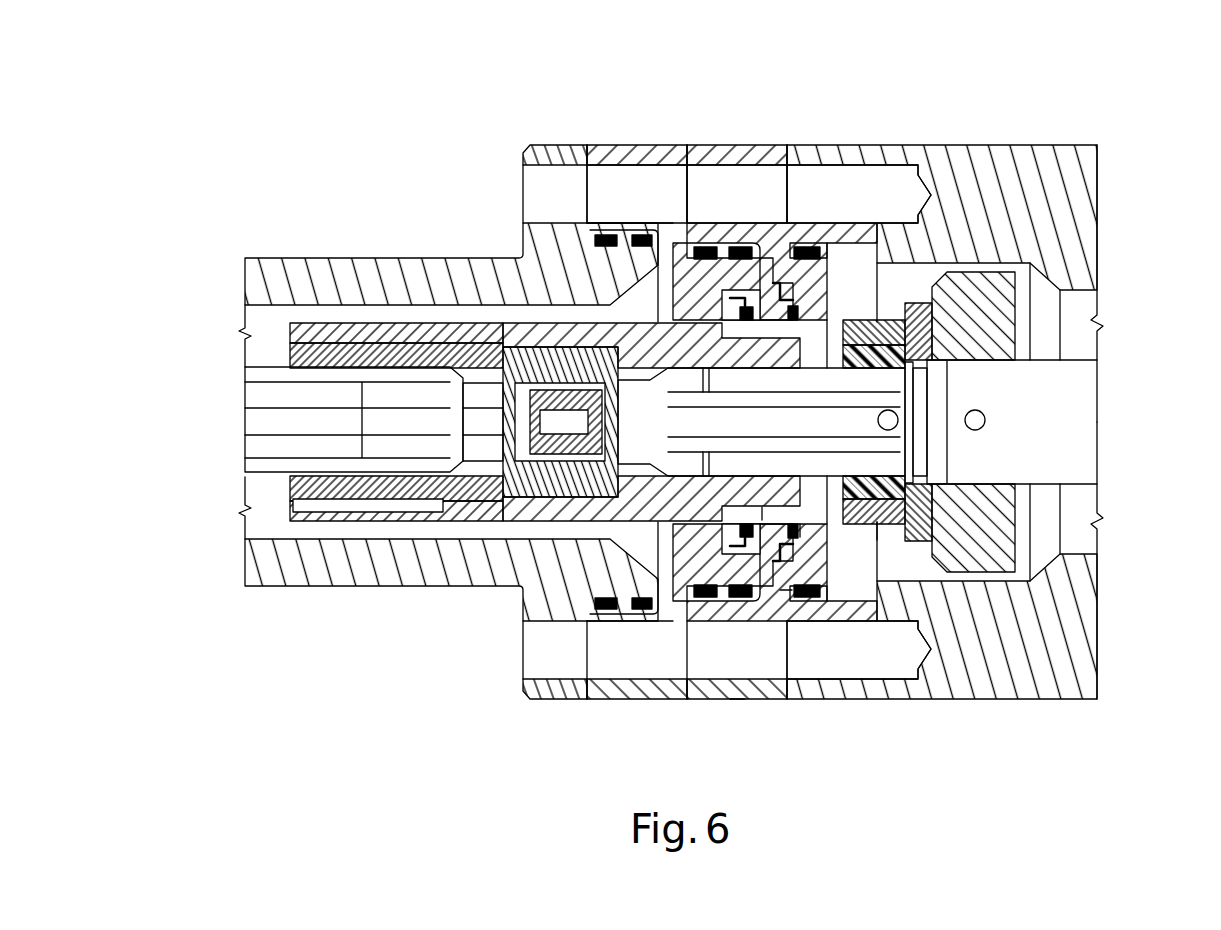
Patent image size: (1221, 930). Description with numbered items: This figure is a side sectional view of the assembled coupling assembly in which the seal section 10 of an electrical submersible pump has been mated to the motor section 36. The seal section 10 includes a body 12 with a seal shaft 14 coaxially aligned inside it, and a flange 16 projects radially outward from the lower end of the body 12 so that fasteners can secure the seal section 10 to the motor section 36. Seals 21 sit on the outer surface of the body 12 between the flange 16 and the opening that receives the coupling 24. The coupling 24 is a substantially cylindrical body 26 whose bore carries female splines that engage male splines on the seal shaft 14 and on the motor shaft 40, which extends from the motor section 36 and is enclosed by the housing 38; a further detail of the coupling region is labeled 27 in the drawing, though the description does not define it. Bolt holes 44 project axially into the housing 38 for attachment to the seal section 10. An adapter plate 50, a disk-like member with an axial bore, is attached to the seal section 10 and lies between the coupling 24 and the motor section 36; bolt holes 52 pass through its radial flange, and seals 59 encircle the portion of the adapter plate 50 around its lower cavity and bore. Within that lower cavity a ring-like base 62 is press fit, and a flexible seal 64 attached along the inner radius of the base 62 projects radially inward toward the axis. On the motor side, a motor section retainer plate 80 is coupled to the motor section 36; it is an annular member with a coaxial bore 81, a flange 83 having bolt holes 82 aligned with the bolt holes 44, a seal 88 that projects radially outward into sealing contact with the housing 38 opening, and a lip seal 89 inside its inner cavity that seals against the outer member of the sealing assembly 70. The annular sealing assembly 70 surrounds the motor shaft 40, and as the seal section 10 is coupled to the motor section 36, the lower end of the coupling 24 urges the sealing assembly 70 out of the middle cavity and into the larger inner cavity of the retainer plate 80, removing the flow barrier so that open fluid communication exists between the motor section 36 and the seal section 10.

The seal section 10 is at (232, 190).
The body 12 is at (430, 256).
The seal shaft 14 is at (265, 397).
The flange 16 is at (562, 142).
The seals 21 is at (603, 222).
The coupling 24 is at (818, 490).
The cylindrical body 26 is at (785, 592).
The seal passage 27 is at (768, 512).
The motor section 36 is at (1083, 112).
The housing 38 is at (1045, 142).
The motor shaft 40 is at (856, 426).
The bolt holes 44 is at (888, 661).
The adapter plate 50 is at (618, 132).
The bolt holes 52 is at (658, 206).
The seals 59 is at (707, 222).
The base 62 is at (770, 302).
The flexible seal 64 is at (745, 318).
The sealing assembly 70 is at (890, 535).
The motor section retainer plate 80 is at (738, 123).
The bore 81 is at (800, 330).
The bolt holes 82 is at (760, 206).
The flange 83 is at (737, 700).
The seal 88 is at (840, 212).
The lip seal 89 is at (808, 537).